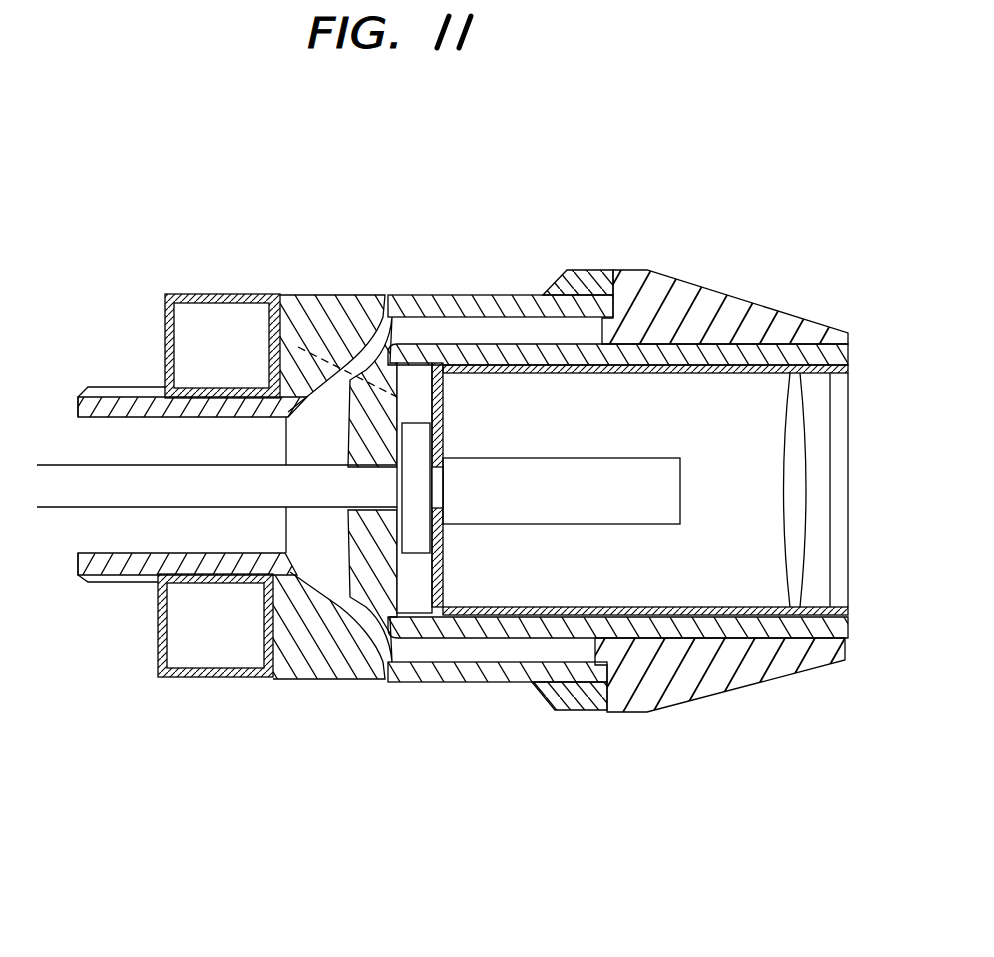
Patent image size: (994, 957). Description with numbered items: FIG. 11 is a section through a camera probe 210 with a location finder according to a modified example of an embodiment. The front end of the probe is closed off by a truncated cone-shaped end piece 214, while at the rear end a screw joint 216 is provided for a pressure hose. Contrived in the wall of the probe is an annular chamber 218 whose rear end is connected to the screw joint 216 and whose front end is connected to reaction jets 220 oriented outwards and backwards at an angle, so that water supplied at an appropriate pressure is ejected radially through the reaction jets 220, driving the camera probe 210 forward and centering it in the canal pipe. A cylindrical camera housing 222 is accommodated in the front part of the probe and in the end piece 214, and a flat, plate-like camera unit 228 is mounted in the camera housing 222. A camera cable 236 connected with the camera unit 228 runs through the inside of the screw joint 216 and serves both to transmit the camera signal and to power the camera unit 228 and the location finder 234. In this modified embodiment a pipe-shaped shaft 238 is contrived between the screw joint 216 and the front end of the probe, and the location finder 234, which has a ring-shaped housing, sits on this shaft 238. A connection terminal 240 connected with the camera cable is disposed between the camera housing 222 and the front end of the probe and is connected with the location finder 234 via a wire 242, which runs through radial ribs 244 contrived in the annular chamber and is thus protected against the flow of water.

The camera probe 210 is at (685, 168).
The end piece 214 is at (740, 297).
The screw joint 216 is at (125, 386).
The annular chamber 218 is at (432, 330).
The reaction jets 220 is at (553, 288).
The camera housing 222 is at (722, 620).
The camera unit 228 is at (565, 525).
The location finder 234 is at (208, 292).
The camera cable 236 is at (73, 510).
The shaft 238 is at (207, 578).
The connection terminal 240 is at (444, 446).
The wire 242 is at (307, 294).
The radial ribs 244 is at (390, 296).